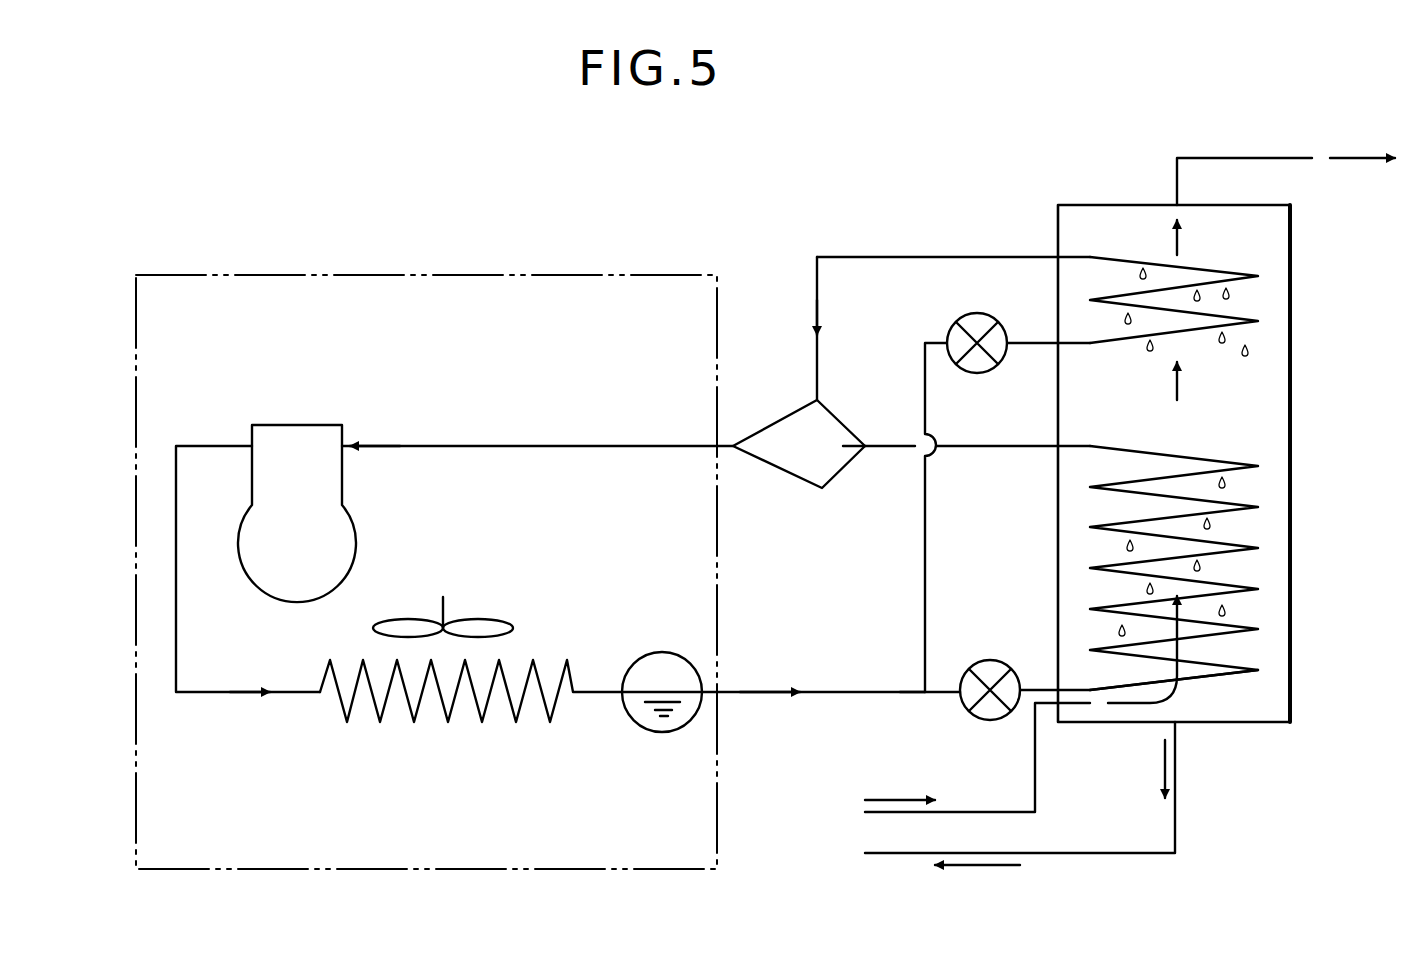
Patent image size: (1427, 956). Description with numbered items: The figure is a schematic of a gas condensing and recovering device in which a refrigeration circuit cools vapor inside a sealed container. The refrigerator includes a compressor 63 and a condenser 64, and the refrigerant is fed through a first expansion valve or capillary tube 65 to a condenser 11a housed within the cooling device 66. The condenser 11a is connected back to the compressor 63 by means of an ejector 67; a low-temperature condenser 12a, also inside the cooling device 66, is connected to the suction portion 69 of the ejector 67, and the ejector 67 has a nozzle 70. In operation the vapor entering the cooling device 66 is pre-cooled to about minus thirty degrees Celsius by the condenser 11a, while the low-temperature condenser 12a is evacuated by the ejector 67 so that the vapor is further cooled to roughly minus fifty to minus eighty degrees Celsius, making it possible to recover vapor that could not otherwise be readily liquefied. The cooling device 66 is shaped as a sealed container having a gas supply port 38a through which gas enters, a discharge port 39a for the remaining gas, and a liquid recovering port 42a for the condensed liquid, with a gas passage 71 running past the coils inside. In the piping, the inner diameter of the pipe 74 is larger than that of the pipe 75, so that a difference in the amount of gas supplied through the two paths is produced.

The compressor 63 is at (286, 432).
The condenser 64 is at (450, 720).
The first expansion valve or capillary tube 65 is at (990, 720).
The cooling device 66 is at (1293, 418).
The ejector 67 is at (780, 472).
The suction portion 69 is at (822, 403).
The nozzle 70 is at (841, 449).
The gas passage 71 is at (1245, 527).
The pipe 74 is at (947, 692).
The pipe 75 is at (926, 575).
The condenser 11a is at (1207, 663).
The low-temperature condenser 12a is at (1250, 321).
The gas supply port 38a is at (1080, 707).
The discharge port 39a is at (1178, 208).
The liquid recovering port 42a is at (1175, 722).